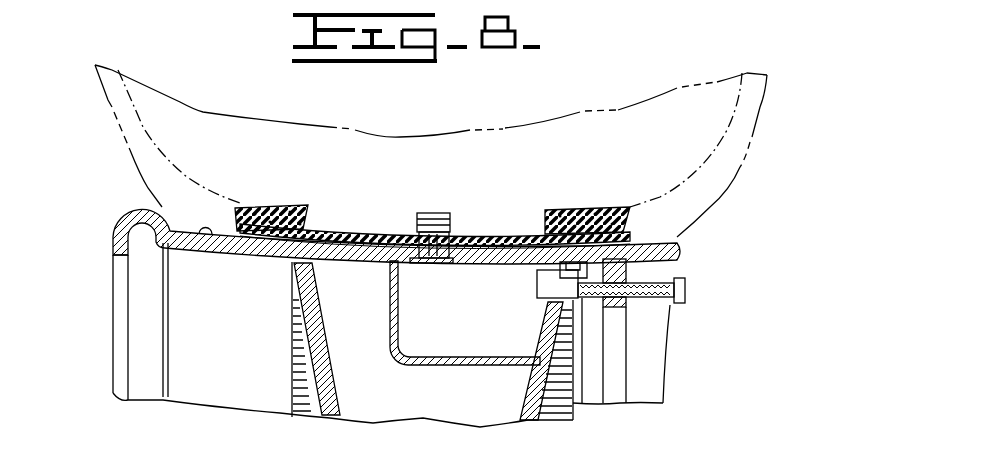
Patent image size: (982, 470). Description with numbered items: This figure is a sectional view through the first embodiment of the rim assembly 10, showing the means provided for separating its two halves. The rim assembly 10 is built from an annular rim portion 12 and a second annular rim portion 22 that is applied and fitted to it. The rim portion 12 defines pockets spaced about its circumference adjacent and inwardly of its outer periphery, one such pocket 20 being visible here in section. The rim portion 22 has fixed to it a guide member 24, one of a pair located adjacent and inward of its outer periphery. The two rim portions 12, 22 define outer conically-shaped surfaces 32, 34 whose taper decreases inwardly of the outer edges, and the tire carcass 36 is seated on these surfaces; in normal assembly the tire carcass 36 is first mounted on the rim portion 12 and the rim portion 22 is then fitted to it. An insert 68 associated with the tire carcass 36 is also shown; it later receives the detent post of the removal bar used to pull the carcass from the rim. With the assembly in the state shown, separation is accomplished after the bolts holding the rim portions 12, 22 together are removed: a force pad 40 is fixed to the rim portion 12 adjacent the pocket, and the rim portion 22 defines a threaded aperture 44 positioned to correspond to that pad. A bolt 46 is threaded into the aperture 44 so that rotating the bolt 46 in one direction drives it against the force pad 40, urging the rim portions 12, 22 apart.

The rim assembly 10 is at (228, 417).
The annular rim portion 12 is at (118, 327).
The pocket 20 is at (443, 337).
The second annular rim portion 22 is at (662, 265).
The guide member 24 is at (580, 256).
The conically-shaped surface 32 is at (207, 236).
The conically-shaped surface 34 is at (645, 247).
The tire carcass 36 is at (130, 140).
The force pad 40 is at (545, 292).
The threaded aperture 44 is at (630, 294).
The bolt 46 is at (687, 301).
The insert 68 is at (437, 233).